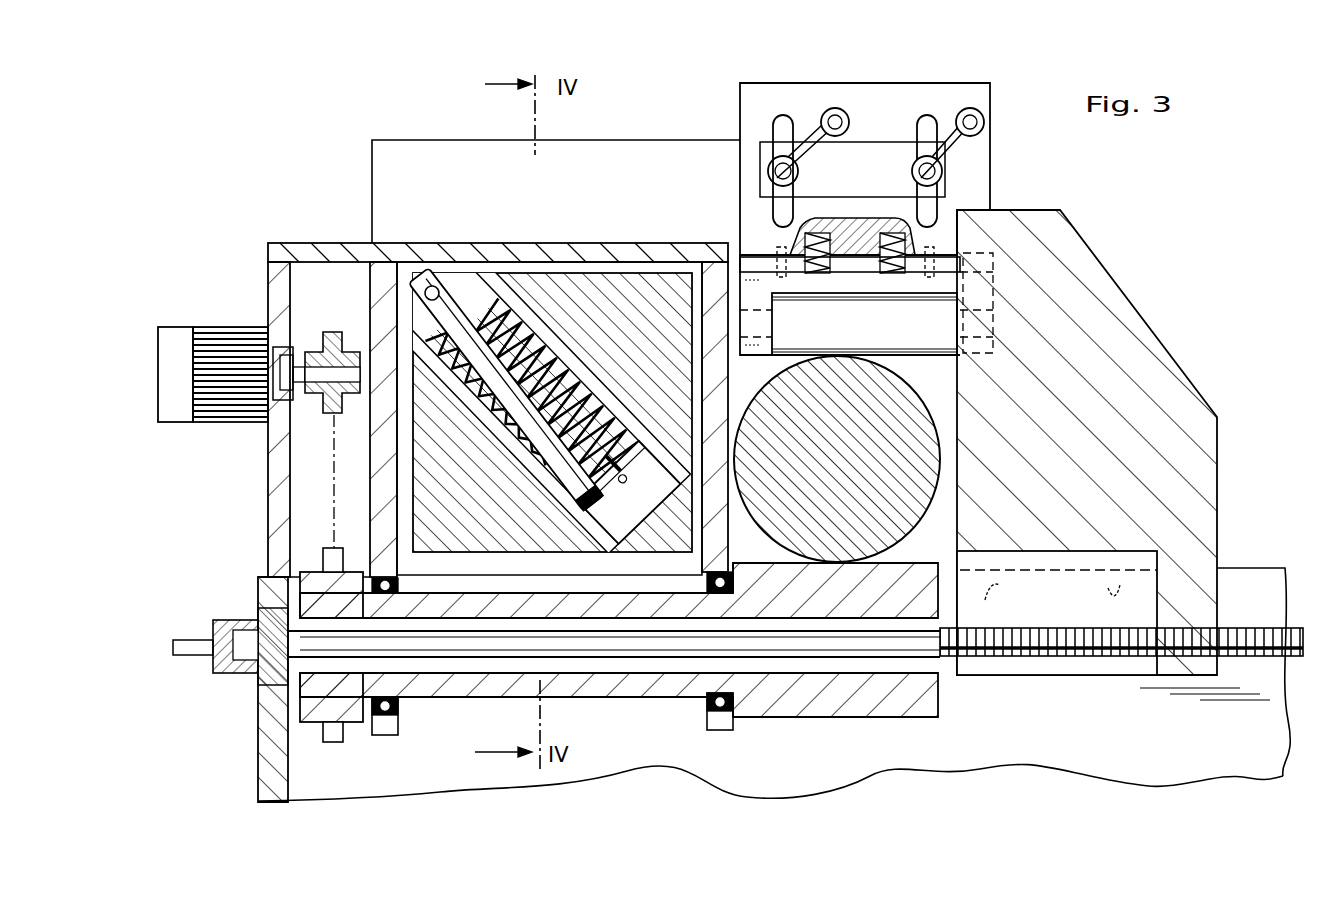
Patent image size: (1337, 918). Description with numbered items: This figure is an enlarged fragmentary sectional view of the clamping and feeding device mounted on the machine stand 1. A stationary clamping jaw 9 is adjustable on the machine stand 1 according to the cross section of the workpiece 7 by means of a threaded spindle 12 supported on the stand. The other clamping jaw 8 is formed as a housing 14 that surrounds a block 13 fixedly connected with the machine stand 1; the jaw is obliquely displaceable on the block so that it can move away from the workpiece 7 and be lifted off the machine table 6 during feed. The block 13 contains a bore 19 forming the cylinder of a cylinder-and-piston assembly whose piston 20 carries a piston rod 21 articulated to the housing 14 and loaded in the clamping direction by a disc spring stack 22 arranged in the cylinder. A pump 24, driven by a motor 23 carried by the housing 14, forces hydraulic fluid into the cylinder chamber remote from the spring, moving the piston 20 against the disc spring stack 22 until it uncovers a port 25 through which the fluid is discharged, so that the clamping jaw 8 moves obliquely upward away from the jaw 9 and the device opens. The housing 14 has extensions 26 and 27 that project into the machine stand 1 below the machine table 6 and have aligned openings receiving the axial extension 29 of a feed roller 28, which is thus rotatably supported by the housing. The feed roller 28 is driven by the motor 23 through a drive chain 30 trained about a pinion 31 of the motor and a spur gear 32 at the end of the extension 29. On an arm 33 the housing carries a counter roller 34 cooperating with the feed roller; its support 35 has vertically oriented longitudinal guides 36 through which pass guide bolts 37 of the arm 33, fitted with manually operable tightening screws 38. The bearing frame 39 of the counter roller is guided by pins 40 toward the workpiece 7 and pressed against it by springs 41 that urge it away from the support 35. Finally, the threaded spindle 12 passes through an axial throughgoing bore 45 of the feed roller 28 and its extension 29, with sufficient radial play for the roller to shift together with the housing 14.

The machine stand 1 is at (1236, 730).
The machine table 6 is at (1244, 568).
The workpiece 7 is at (925, 418).
The clamping jaw 8 is at (730, 383).
The clamping jaw 9 is at (953, 468).
The threaded spindle 12 is at (1112, 640).
The block 13 is at (597, 276).
The housing 14 is at (378, 300).
The bore 19 is at (617, 514).
The piston 20 is at (583, 497).
The piston rod 21 is at (447, 288).
The disc spring stack 22 is at (512, 318).
The motor 23 is at (222, 348).
The pump 24 is at (180, 338).
The port 25 is at (642, 507).
The extension 26 is at (380, 728).
The extension 27 is at (722, 722).
The feed roller 28 is at (890, 708).
The axial extension 29 is at (457, 690).
The drive chain 30 is at (330, 519).
The pinion 31 is at (330, 333).
The spur gear 32 is at (323, 577).
The arm 33 is at (495, 146).
The counter roller 34 is at (955, 290).
The support 35 is at (748, 108).
The longitudinal guides 36 is at (775, 212).
The guide bolts 37 is at (768, 170).
The tightening screws 38 is at (918, 170).
The bearing frame 39 is at (845, 294).
The pins 40 is at (777, 262).
The springs 41 is at (866, 235).
The throughgoing bore 45 is at (650, 665).